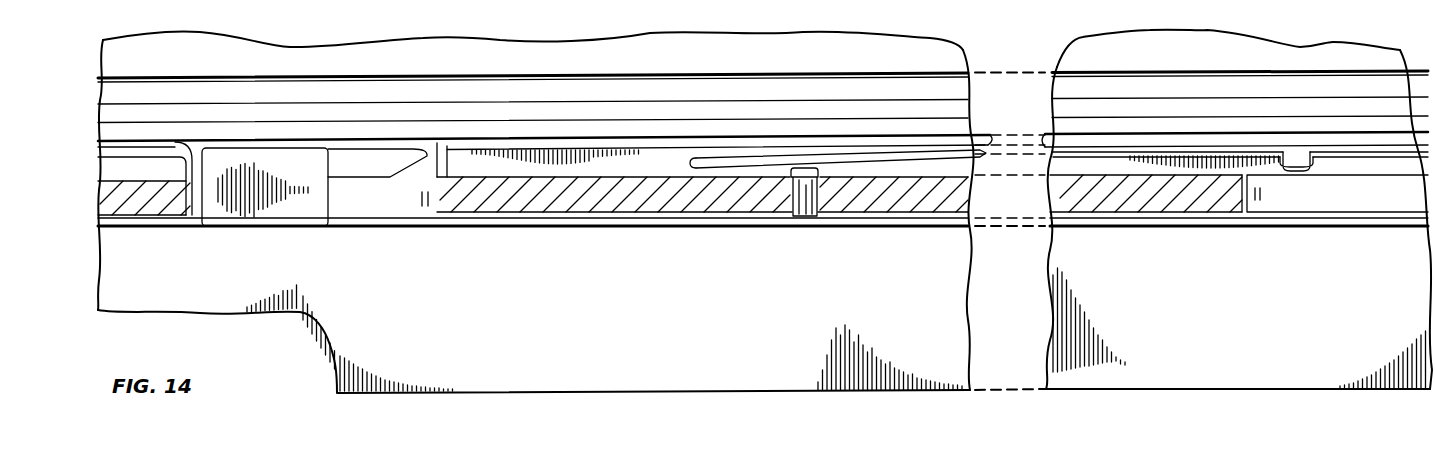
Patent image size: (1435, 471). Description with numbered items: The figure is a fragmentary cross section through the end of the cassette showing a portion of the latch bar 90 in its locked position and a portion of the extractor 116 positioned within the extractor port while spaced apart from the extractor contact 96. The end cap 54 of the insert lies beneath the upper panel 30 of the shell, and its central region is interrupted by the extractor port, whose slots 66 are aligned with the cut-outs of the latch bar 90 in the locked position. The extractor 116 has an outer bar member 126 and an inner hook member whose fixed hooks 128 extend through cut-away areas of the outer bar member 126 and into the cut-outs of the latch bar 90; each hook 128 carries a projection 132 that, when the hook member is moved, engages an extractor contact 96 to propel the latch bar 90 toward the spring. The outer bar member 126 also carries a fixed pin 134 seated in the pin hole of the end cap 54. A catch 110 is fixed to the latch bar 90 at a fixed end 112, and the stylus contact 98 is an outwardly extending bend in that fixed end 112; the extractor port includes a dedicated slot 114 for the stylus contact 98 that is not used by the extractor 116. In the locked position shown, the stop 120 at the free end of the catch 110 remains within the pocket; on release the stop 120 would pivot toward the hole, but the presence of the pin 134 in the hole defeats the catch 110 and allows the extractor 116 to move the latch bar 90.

The upper panel 30 is at (550, 65).
The end cap 54 is at (588, 200).
The slots 66 is at (391, 196).
The latch bar 90 is at (145, 145).
The extractor contacts 96 is at (442, 145).
The stylus contact 98 is at (1298, 172).
The catch 110 is at (728, 157).
The fixed end 112 is at (1372, 158).
The dedicated slot 114 is at (1334, 194).
The extractor 116 is at (1268, 402).
The stop 120 is at (690, 163).
The outer bar member 126 is at (674, 341).
The hooks 128 is at (320, 173).
The projection 132 is at (412, 148).
The pin 134 is at (802, 218).